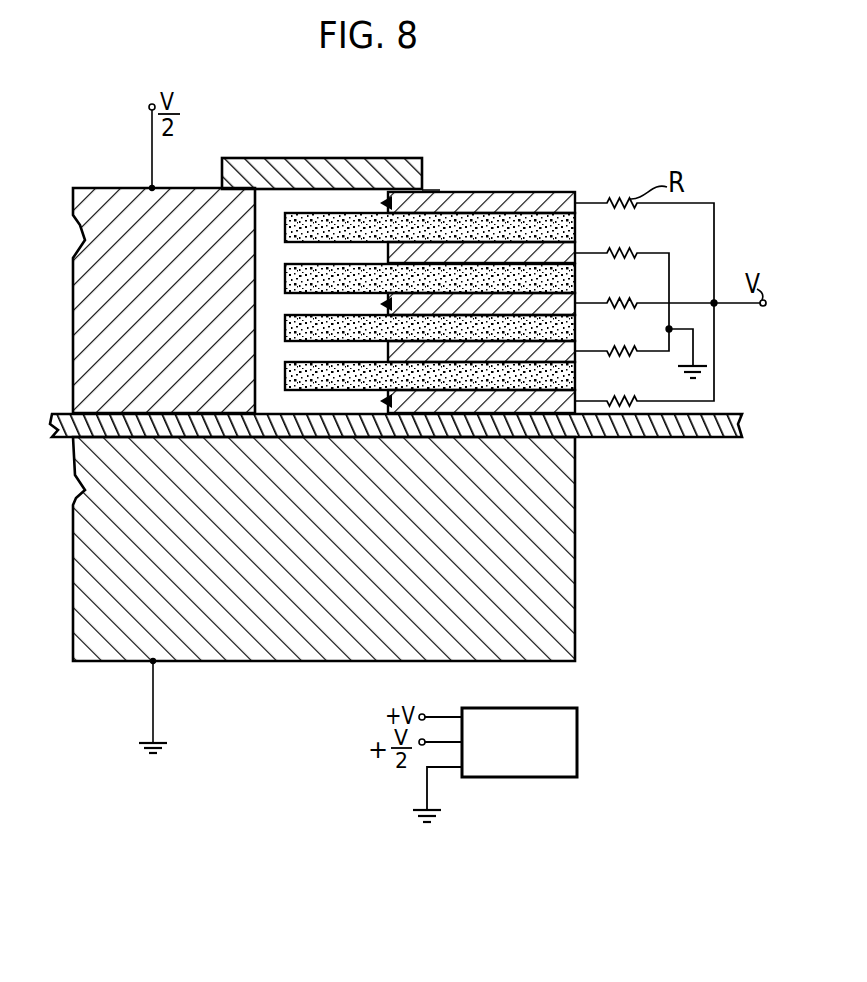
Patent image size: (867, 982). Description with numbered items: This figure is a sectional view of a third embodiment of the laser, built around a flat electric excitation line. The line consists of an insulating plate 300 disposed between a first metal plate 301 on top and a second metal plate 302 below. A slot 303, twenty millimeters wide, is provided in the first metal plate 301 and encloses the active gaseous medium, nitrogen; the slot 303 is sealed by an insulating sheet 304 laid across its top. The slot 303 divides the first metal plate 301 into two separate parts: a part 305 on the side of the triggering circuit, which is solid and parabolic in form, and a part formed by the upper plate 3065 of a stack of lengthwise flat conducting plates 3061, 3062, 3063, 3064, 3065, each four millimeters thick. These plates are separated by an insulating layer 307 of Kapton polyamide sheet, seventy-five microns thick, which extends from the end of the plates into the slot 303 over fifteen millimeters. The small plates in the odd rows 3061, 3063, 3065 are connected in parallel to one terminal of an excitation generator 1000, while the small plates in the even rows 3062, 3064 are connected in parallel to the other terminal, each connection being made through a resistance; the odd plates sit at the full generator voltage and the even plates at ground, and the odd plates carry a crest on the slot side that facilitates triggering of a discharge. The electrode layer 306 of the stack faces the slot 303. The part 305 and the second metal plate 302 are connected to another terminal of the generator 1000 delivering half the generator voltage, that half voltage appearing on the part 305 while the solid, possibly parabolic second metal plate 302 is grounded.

The insulating plate 300 is at (692, 438).
The first metal plate 301 is at (434, 183).
The second metal plate 302 is at (552, 566).
The slot 303 is at (267, 205).
The insulating sheet 304 is at (336, 158).
The part 305 is at (108, 226).
The electrode layer 306 is at (505, 207).
The insulating layer 307 is at (548, 218).
The conducting plate 3061 is at (576, 401).
The conducting plate 3062 is at (576, 351).
The conducting plate 3063 is at (576, 303).
The conducting plate 3064 is at (576, 253).
The conducting plate 3065 is at (576, 200).
The excitation generator 1000 is at (540, 726).